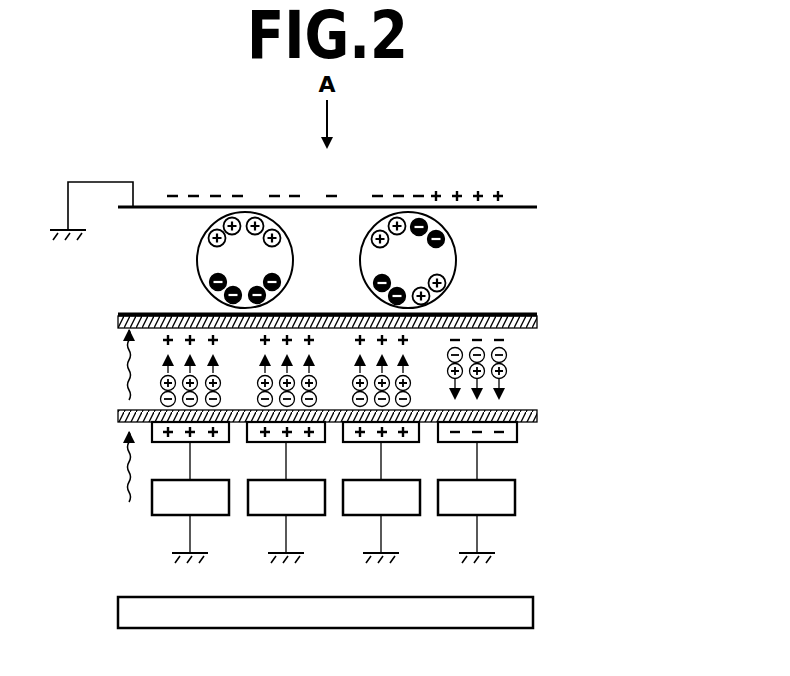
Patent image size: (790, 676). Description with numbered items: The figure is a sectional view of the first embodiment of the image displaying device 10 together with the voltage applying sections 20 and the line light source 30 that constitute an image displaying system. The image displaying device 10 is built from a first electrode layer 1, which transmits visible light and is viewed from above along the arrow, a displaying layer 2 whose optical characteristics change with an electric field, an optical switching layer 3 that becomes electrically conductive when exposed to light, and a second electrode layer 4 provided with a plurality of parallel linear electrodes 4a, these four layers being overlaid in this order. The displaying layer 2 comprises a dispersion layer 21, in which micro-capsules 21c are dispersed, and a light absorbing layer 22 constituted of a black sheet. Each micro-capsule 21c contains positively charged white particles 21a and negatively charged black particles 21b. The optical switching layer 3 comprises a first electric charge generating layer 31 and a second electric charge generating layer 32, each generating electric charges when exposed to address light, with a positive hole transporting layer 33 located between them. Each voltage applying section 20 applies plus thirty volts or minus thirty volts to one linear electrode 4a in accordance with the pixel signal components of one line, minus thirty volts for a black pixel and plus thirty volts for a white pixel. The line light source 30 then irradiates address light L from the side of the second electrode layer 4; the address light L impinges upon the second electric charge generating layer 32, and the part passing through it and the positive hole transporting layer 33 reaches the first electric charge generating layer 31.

The image displaying device 10 is at (602, 122).
The first electrode layer 1 is at (518, 207).
The displaying layer 2 is at (550, 208).
The dispersion layer 21 is at (120, 279).
The positively charged white particles 21a is at (281, 232).
The negatively charged black particles 21b is at (288, 278).
The micro-capsule 21c is at (198, 267).
The light absorbing layer 22 is at (120, 313).
The first electric charge generating layer 31 is at (120, 321).
The optical switching layer 3 is at (550, 318).
The positive hole transporting layer 33 is at (122, 357).
The address light L is at (127, 388).
The second electric charge generating layer 32 is at (120, 415).
The second electrode layer 4 is at (550, 427).
The linear electrode 4a is at (222, 443).
The voltage applying section 20 is at (215, 516).
The line light source 30 is at (533, 614).